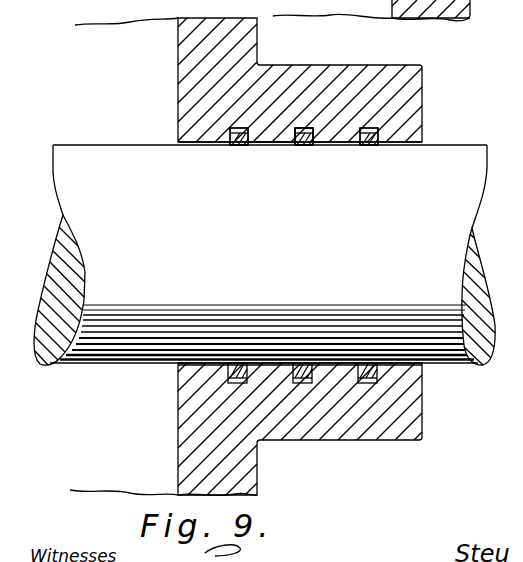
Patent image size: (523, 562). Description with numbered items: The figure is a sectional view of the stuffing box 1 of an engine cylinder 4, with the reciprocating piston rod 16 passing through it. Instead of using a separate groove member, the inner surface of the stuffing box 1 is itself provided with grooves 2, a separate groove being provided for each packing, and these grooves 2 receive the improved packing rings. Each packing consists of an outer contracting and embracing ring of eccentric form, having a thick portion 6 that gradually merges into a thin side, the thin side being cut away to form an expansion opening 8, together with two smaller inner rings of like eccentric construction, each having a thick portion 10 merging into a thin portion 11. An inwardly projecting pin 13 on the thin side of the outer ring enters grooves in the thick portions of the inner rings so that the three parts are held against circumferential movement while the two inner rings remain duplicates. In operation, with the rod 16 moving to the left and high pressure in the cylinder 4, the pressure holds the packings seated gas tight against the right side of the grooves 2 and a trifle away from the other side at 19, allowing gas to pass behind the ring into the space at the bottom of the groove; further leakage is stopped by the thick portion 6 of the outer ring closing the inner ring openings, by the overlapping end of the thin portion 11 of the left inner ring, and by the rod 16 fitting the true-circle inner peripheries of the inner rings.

The stuffing box 1 is at (272, 71).
The grooves 2 is at (372, 128).
The cylinder 4 is at (246, 429).
The thick portion 6 is at (213, 146).
The expansion opening 8 is at (305, 146).
The thick portion 10 is at (310, 146).
The thin portion 11 is at (245, 146).
The pin 13 is at (363, 146).
The rod 16 is at (271, 165).
The other side of groove 19 is at (320, 407).